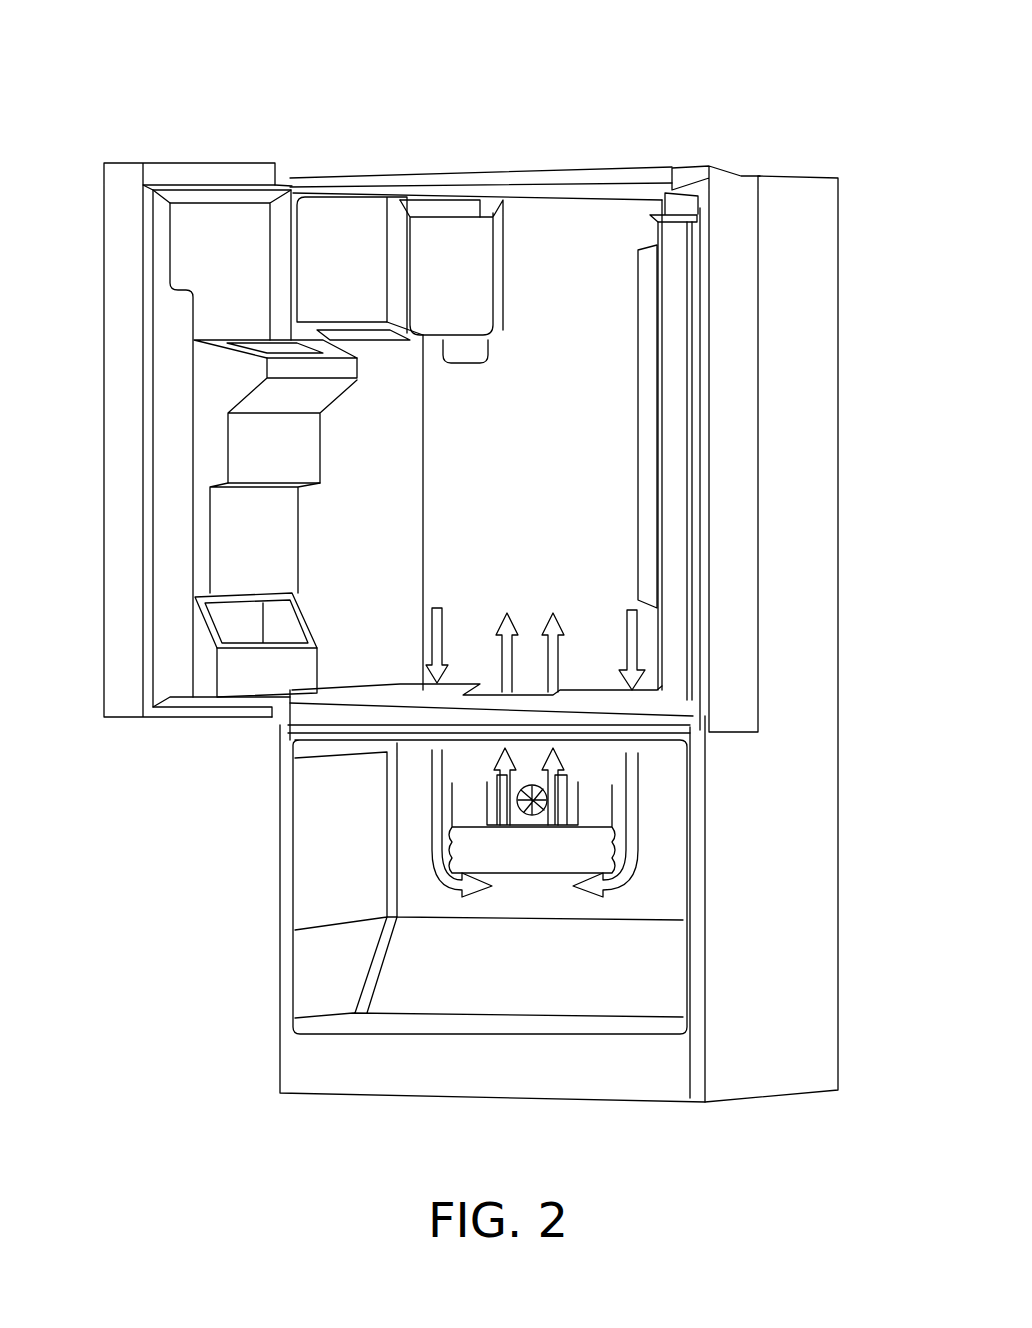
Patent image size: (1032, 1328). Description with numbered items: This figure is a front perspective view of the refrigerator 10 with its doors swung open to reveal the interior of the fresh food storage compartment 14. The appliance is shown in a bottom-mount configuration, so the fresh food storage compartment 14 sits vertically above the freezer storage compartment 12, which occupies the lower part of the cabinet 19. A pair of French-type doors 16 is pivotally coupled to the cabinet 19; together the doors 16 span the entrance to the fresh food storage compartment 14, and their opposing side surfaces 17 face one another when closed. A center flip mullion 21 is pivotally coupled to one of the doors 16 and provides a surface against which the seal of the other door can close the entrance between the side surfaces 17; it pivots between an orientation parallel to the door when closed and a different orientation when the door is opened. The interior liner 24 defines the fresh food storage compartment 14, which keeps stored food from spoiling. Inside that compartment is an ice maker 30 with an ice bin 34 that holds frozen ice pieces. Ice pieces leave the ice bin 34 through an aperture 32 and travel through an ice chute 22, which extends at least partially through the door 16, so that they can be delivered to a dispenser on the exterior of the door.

The refrigerator 10 is at (789, 110).
The freezer storage compartment 12 is at (548, 983).
The fresh food storage compartment 14 is at (574, 435).
The door 16 is at (104, 283).
The side surface 17 is at (115, 345).
The cabinet 19 is at (827, 328).
The center flip mullion 21 is at (638, 500).
The ice chute 22 is at (262, 343).
The interior liner 24 is at (600, 219).
The ice maker 30 is at (455, 295).
The aperture 32 is at (367, 345).
The ice bin 34 is at (363, 305).